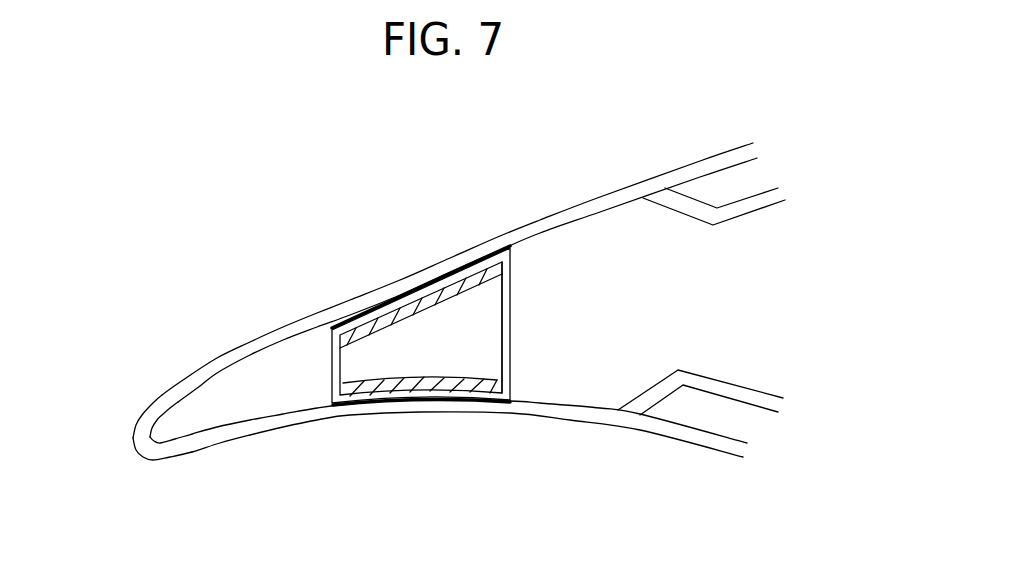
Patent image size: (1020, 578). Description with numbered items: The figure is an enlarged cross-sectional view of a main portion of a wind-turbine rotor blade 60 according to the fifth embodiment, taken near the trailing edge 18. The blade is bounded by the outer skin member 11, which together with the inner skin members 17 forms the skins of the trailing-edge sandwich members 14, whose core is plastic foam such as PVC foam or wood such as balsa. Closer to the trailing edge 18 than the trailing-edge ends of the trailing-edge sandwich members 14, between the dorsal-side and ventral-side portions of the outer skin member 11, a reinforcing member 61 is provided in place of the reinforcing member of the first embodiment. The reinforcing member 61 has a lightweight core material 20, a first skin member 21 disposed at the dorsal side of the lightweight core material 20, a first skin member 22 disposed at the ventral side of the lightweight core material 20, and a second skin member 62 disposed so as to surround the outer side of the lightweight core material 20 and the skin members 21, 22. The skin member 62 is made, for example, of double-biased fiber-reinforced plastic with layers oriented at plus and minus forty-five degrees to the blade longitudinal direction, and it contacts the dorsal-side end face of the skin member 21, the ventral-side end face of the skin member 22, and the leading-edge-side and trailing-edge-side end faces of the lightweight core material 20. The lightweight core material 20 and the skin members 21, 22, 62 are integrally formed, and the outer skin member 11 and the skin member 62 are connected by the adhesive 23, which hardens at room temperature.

The wind-turbine rotor blade 60 is at (248, 150).
The outer skin member 11 is at (583, 210).
The trailing-edge sandwich member 14 is at (702, 301).
The inner skin member 17 is at (753, 207).
The trailing edge 18 is at (136, 447).
The lightweight core material 20 is at (477, 355).
The first skin member 21 is at (493, 270).
The first skin member 22 is at (468, 382).
The adhesive 23 is at (400, 296).
The reinforcing member 61 is at (490, 316).
The second skin member 62 is at (505, 310).